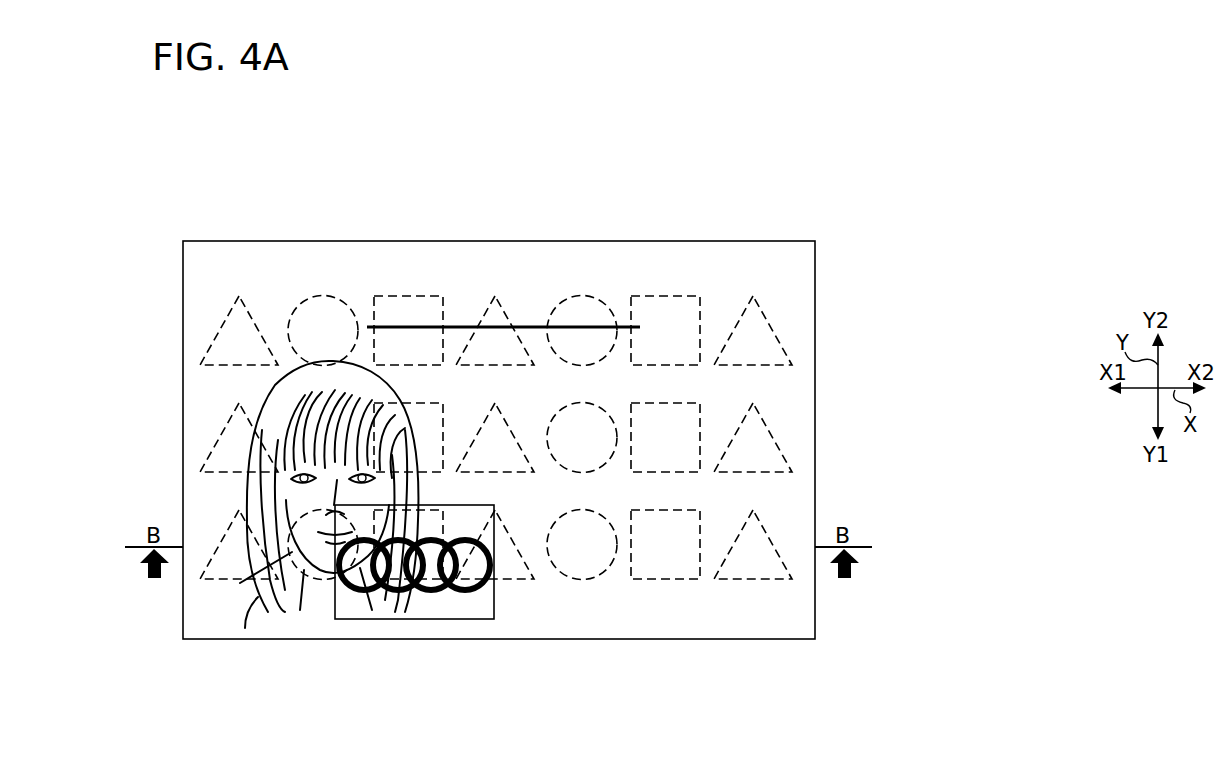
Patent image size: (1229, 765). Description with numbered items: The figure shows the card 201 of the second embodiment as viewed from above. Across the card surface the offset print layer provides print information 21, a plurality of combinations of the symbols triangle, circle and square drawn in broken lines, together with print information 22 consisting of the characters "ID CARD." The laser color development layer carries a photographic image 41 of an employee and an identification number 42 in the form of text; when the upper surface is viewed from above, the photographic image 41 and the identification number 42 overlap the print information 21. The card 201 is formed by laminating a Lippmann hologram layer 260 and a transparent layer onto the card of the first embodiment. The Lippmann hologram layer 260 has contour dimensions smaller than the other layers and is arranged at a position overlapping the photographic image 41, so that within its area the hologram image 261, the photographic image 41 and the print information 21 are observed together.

The card 201 is at (840, 238).
The print information 21 is at (758, 581).
The print information 22 is at (558, 283).
The photographic image 41 is at (265, 590).
The identification number 42 is at (668, 563).
The Lippmann hologram layer 260 is at (382, 620).
The Lippmann type hologram image 261 is at (460, 594).